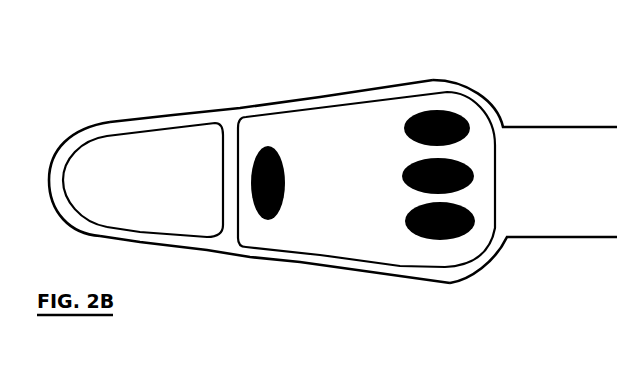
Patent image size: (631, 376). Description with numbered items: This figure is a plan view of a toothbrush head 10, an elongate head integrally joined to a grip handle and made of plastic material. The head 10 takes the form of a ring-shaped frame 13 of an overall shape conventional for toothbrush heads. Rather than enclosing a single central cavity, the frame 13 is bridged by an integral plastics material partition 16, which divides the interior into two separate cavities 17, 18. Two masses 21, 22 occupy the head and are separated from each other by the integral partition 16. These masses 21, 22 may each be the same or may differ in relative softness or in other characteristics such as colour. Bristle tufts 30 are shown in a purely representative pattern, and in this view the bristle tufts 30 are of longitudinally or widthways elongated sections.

The head 10 is at (140, 97).
The ring-shaped frame 13 is at (358, 92).
The partition 16 is at (230, 182).
The cavity 17 is at (195, 240).
The cavity 18 is at (363, 267).
The mass 21 is at (143, 175).
The mass 22 is at (366, 179).
The bristle tufts 30 is at (267, 145).